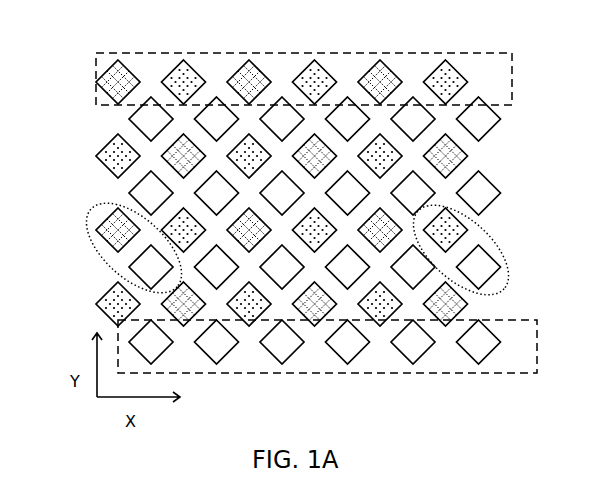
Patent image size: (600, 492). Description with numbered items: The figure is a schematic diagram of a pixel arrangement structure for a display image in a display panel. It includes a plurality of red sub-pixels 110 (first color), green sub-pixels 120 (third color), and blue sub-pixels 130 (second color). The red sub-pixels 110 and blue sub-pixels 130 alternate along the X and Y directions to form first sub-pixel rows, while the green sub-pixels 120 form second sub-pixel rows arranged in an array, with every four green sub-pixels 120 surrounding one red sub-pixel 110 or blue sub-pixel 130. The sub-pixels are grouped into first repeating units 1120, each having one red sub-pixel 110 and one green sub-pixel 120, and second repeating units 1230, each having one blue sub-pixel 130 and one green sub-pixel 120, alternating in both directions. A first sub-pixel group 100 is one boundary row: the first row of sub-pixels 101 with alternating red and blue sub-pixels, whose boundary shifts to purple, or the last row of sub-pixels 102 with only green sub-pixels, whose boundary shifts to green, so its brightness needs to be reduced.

The first sub-pixel group 100 is at (298, 212).
The first row of sub-pixels 101 is at (338, 53).
The last row of sub-pixels 102 is at (400, 373).
The red sub-pixel 110 is at (103, 81).
The green sub-pixel 120 is at (143, 120).
The blue sub-pixel 130 is at (112, 152).
The first repeating unit 1120 is at (110, 267).
The second repeating unit 1230 is at (498, 243).